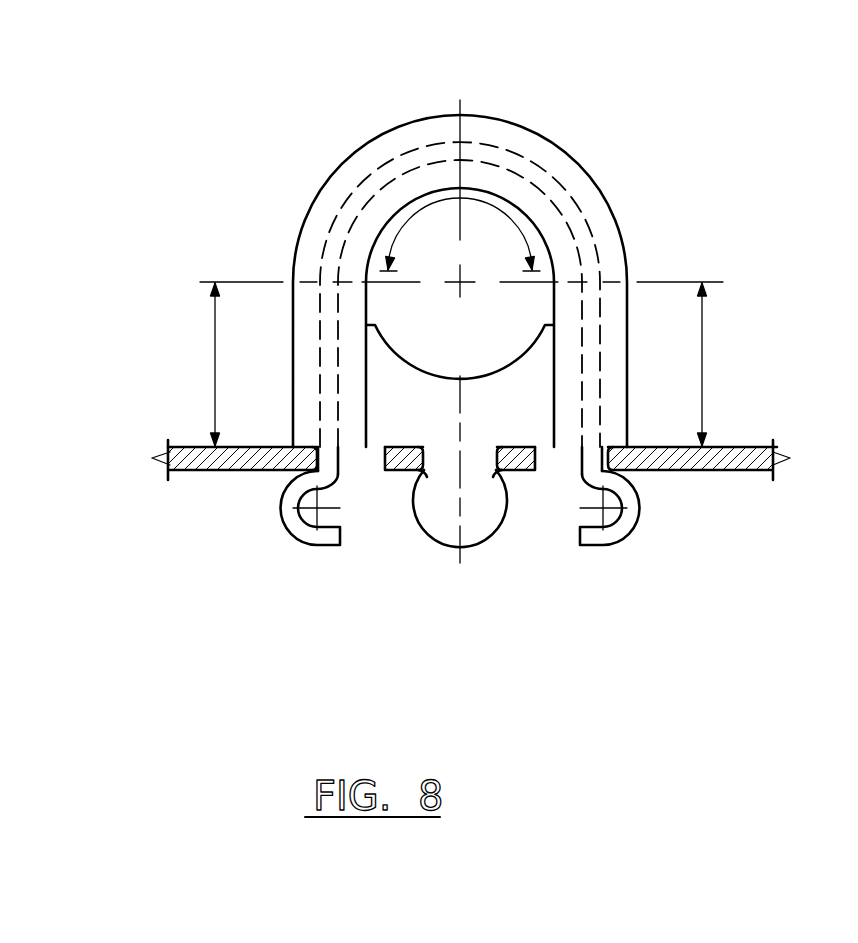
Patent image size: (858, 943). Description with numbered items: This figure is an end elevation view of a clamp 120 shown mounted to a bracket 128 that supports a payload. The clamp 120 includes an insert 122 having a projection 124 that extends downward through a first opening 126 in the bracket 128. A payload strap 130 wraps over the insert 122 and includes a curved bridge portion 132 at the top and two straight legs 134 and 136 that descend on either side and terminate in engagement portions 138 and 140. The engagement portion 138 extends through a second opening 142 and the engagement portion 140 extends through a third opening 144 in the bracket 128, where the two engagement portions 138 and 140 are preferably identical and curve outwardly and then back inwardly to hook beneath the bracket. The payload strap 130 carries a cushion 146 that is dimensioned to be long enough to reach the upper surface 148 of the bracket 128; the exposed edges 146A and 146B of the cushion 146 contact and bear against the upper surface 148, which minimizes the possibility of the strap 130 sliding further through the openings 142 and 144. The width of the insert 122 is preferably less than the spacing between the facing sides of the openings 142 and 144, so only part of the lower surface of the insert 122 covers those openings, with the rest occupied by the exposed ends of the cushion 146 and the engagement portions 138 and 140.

The clamp 120 is at (300, 216).
The insert 122 is at (434, 542).
The projection 124 is at (473, 543).
The first opening 126 is at (513, 483).
The bracket 128 is at (708, 470).
The payload strap 130 is at (575, 157).
The curved bridge portion 132 is at (472, 210).
The straight leg 134 is at (705, 363).
The straight leg 136 is at (215, 363).
The engagement portion 138 is at (640, 532).
The engagement portion 140 is at (283, 531).
The second opening 142 is at (562, 473).
The third opening 144 is at (362, 472).
The cushion 146 is at (610, 212).
The exposed edge of the cushion 146A is at (637, 470).
The exposed edge of the cushion 146B is at (282, 471).
The upper surface 148 is at (720, 447).